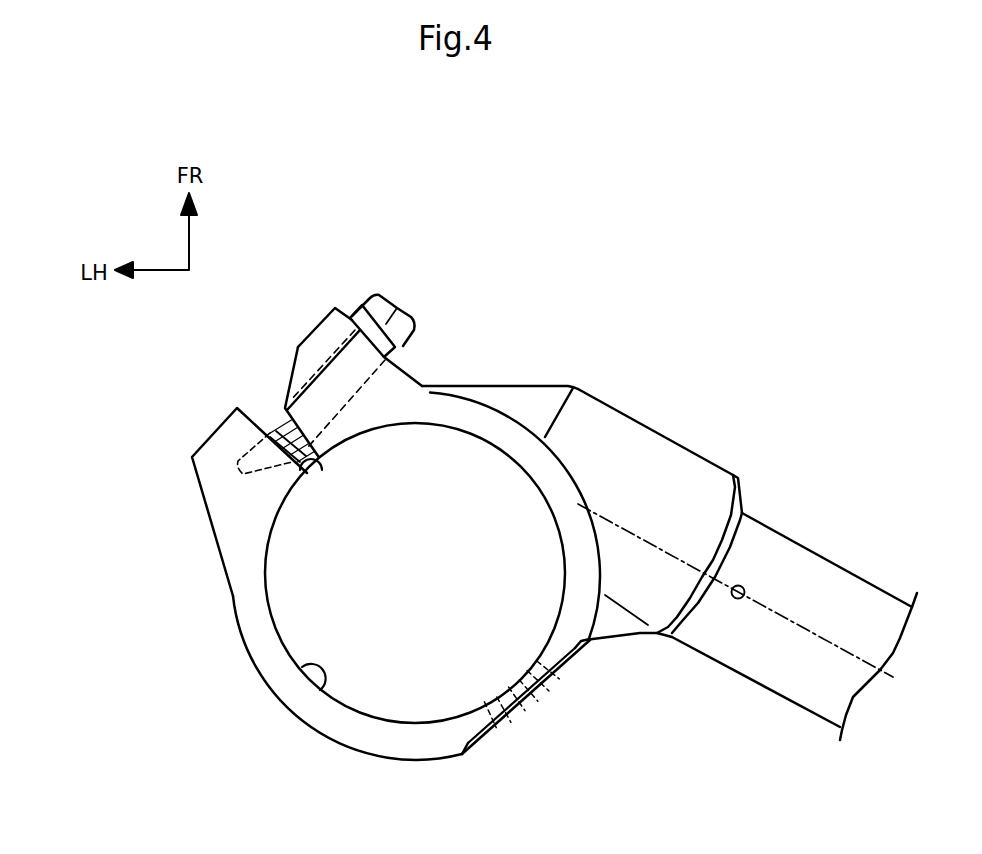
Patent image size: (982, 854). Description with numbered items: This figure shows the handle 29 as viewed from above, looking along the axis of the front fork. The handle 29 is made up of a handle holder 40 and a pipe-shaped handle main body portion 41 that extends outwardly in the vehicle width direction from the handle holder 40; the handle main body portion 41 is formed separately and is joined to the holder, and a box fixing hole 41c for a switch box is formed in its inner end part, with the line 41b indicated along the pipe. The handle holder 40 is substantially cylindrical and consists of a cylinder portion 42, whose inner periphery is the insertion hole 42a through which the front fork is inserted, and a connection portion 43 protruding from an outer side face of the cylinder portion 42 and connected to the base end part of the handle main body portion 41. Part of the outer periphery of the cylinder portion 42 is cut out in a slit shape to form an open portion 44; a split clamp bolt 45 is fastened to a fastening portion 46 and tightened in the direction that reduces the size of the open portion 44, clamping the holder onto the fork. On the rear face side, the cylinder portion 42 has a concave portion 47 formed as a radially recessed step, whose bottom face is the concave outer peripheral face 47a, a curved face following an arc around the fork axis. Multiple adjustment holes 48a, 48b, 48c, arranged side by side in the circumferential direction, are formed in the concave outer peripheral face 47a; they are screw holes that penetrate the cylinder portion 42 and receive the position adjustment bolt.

The handle 29 is at (541, 238).
The handle holder 40 is at (234, 656).
The handle main body portion 41 is at (817, 548).
The axis of pipe member 41b is at (813, 636).
The box fixing hole 41c is at (744, 588).
The cylinder portion 42 is at (277, 680).
The insertion hole 42a is at (320, 690).
The connection portion 43 is at (652, 447).
The open portion 44 is at (322, 470).
The split clamp bolt 45 is at (393, 302).
The fastening portion 46 is at (225, 418).
The concave portion 47 is at (507, 750).
The concave outer peripheral face 47a is at (524, 720).
The adjustment hole 48a is at (483, 715).
The adjustment hole 48b is at (513, 695).
The adjustment hole 48c is at (545, 686).